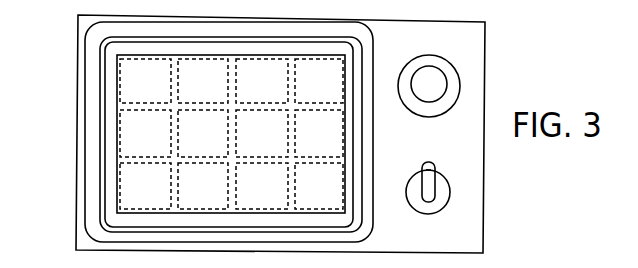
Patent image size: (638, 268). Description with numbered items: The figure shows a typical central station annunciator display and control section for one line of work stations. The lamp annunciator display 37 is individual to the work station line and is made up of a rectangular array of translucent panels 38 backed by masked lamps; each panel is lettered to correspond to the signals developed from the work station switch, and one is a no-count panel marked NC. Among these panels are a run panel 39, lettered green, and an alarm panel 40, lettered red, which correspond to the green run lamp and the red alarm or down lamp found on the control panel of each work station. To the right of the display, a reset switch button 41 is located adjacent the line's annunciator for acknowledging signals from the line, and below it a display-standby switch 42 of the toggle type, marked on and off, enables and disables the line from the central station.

The lamp annunciator display 37 is at (107, 150).
The translucent panels 38 is at (321, 60).
The run panel 39 is at (185, 145).
The alarm panel 40 is at (245, 143).
The reset switch button 41 is at (438, 73).
The display-standby switch 42 is at (433, 193).